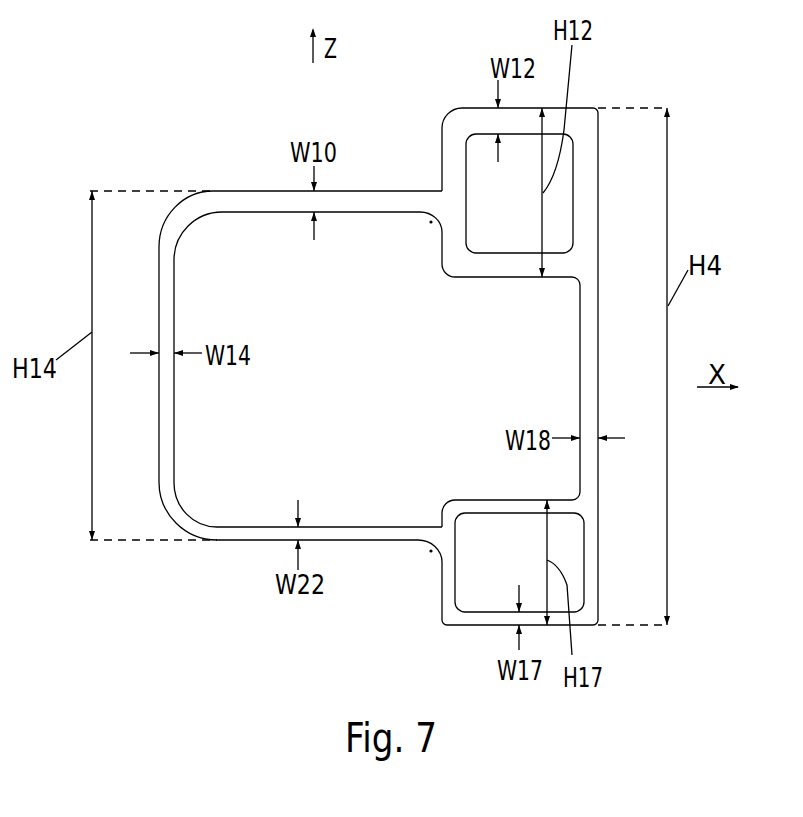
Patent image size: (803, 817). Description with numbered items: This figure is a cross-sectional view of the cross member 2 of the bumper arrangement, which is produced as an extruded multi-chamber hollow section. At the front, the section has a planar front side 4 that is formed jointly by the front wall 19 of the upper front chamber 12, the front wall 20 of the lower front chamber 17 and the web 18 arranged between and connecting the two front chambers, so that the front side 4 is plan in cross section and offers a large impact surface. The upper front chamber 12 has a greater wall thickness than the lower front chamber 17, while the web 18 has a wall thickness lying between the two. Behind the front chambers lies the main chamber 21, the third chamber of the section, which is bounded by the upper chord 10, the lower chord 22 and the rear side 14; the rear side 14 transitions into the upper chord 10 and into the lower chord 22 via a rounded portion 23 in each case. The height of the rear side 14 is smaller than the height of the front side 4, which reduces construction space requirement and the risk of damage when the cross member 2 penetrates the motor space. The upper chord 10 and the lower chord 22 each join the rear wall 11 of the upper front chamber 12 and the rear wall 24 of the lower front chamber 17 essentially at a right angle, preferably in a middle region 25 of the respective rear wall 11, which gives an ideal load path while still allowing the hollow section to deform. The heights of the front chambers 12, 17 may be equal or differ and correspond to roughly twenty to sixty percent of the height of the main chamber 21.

The cross member 2 is at (200, 120).
The front side 4 is at (485, 356).
The upper chord 10 is at (280, 190).
The rear wall 11 is at (441, 151).
The upper front chamber 12 is at (519, 193).
The rear side 14 is at (158, 388).
The lower front chamber 17 is at (519, 562).
The web 18 is at (586, 353).
The front wall 19 is at (587, 192).
The front wall 20 is at (590, 562).
The main chamber 21 is at (449, 379).
The lower chord 22 is at (250, 541).
The rounded portion 23 is at (188, 217).
The rear wall 24 is at (441, 577).
The middle region 25 is at (405, 237).